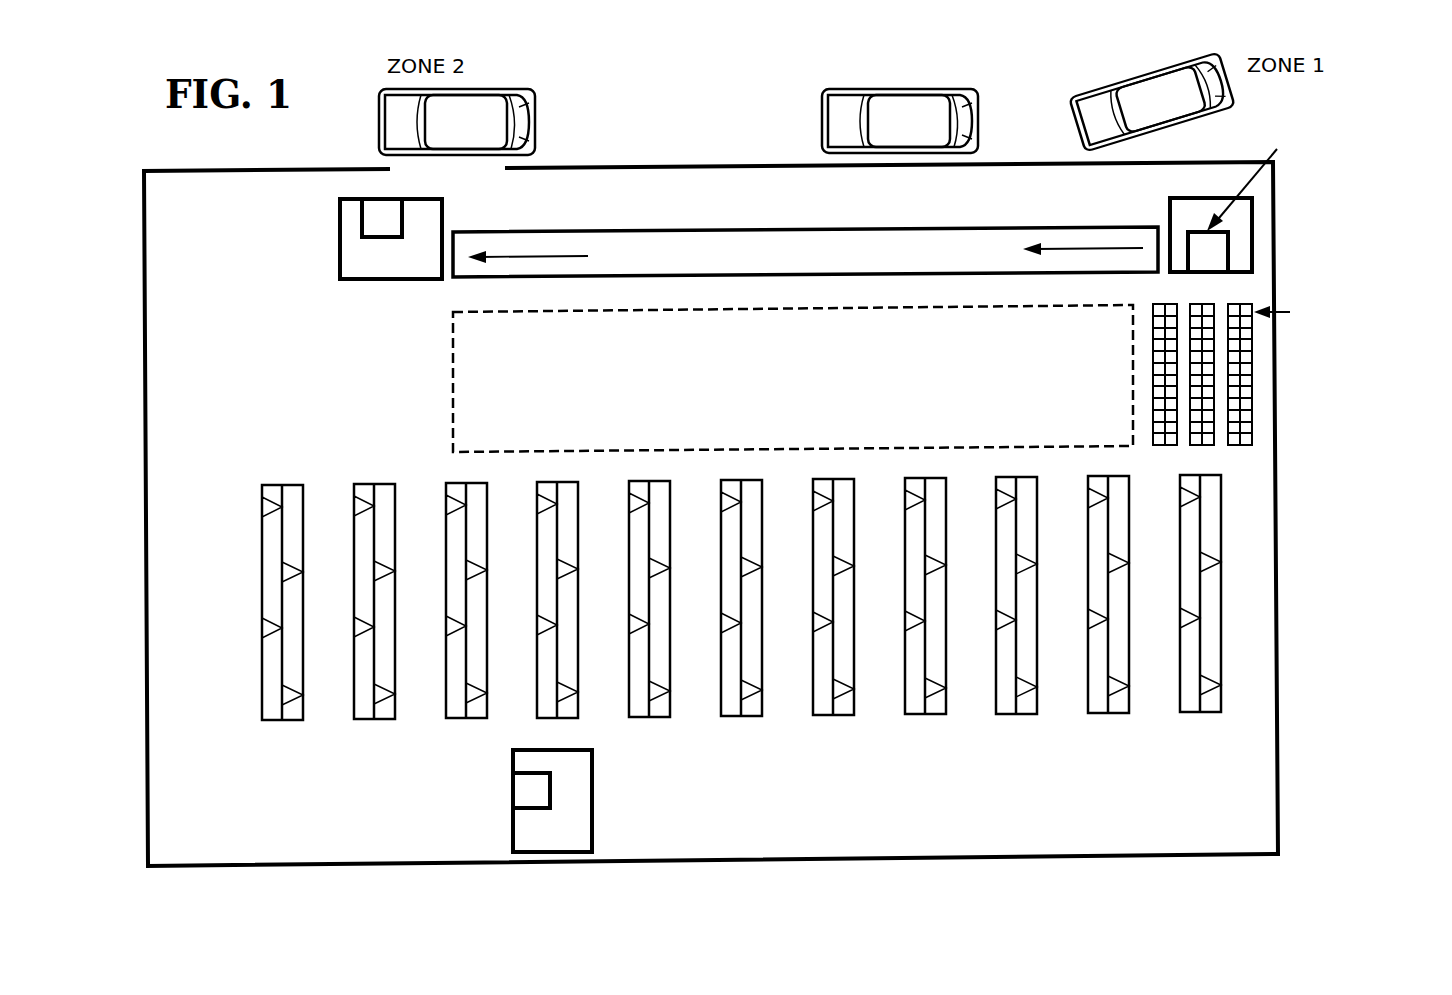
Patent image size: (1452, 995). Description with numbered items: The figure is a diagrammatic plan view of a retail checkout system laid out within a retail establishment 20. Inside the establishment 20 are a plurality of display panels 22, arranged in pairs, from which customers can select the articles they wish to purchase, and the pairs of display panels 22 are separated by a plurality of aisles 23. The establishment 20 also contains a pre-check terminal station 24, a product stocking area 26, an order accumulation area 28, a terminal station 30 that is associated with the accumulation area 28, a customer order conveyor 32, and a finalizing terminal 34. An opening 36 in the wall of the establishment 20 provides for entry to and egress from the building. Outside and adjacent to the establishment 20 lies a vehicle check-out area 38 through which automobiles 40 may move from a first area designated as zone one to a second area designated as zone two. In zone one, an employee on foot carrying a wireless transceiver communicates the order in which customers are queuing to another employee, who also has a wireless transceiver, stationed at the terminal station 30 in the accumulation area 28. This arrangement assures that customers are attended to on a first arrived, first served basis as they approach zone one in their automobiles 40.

The retail establishment 20 is at (1293, 592).
The display panels 22 is at (287, 720).
The aisles 23 is at (326, 489).
The pre-check terminal station 24 is at (592, 803).
The product stocking area 26 is at (450, 373).
The order accumulation area 28 is at (1257, 471).
The terminal station 30 is at (1253, 248).
The customer order conveyor 32 is at (993, 226).
The finalizing terminal 34 is at (395, 281).
The opening 36 is at (472, 174).
The vehicle check-out area 38 is at (880, 56).
The automobiles 40 is at (537, 116).